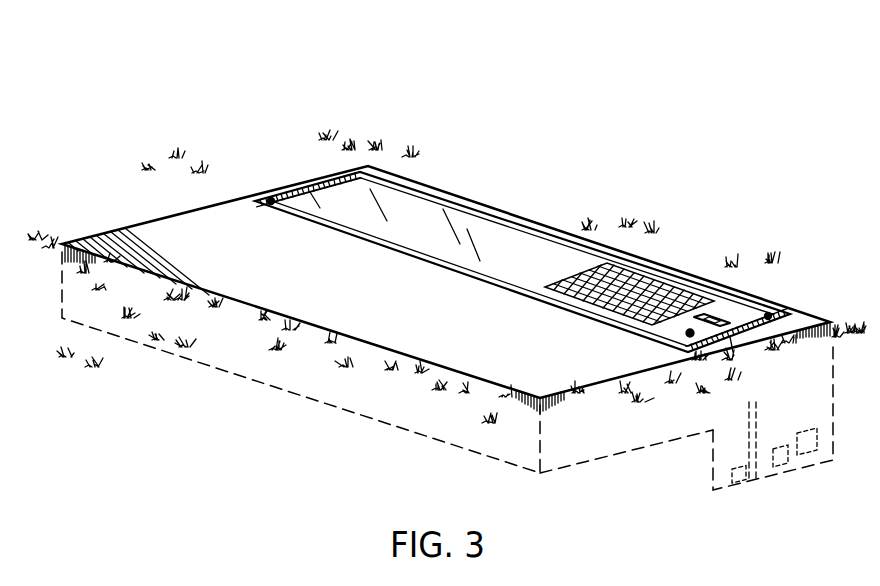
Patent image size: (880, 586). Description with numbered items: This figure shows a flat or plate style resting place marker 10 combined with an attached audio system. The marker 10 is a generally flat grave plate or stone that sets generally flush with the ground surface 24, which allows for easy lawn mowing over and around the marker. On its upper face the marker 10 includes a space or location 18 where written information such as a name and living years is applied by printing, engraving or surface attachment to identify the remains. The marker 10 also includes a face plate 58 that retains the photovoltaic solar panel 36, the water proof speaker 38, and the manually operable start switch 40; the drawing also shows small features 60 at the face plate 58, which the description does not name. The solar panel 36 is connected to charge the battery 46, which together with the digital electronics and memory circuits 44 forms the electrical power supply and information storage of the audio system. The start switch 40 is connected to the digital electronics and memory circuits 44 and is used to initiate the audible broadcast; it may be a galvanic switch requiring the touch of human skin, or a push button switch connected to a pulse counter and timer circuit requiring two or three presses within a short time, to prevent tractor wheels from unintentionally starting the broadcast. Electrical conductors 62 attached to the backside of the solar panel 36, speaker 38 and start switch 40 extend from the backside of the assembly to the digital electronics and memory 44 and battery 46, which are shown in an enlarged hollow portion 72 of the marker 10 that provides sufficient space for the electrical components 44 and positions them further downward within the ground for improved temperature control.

The flat plate style marker 10 is at (180, 230).
The space or location for written information 18 is at (500, 322).
The ground surface 24 is at (42, 237).
The photovoltaic panel (solar panel) 36 is at (443, 220).
The water proof speaker 38 is at (642, 325).
The start switch 40 is at (717, 317).
The digital electronics and memory circuits 44 is at (758, 480).
The battery 46 is at (803, 450).
The face plate 58 is at (306, 184).
The fasteners 60 is at (768, 316).
The electrical conductors 62 is at (753, 411).
The enlarged hollow portion 72 is at (703, 477).